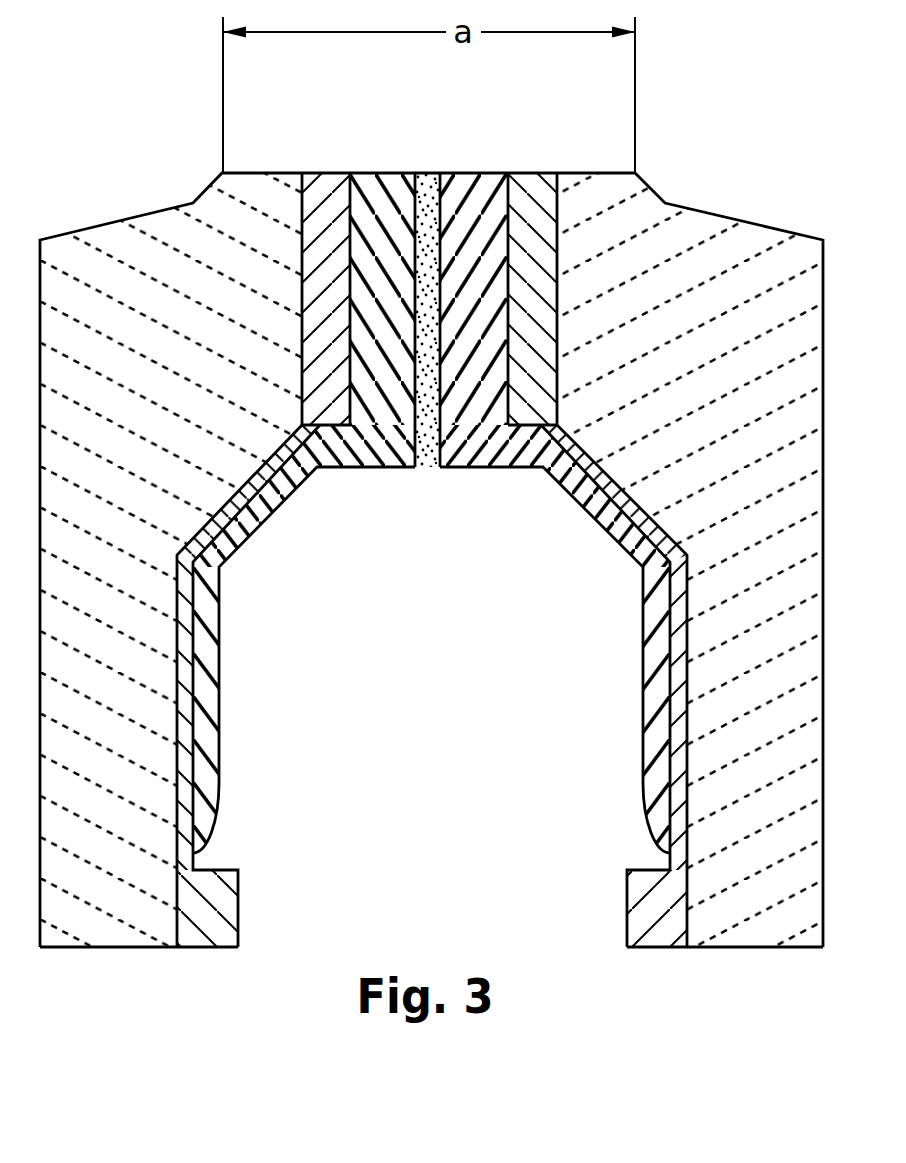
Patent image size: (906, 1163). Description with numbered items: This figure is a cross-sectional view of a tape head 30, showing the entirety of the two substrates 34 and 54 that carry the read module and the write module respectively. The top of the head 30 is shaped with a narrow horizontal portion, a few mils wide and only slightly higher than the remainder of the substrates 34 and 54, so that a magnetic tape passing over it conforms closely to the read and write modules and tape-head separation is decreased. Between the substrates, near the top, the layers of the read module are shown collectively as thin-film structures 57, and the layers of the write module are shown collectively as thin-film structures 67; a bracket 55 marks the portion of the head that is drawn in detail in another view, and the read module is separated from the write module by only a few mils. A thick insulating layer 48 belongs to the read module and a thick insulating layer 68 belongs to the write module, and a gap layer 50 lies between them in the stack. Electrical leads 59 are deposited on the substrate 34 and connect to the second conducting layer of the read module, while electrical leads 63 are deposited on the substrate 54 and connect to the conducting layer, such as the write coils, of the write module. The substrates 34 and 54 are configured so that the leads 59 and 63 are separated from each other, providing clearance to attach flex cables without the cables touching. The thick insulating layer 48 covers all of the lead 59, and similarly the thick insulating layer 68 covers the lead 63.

The tape head 30 is at (94, 958).
The substrate 34 is at (110, 245).
The substrate 54 is at (742, 250).
The bracket 55 is at (432, 504).
The thin-film structures 57 is at (328, 210).
The thick insulating layer 48 is at (383, 200).
The gap layer 50 is at (428, 186).
The thick insulating layer 68 is at (482, 193).
The thin-film structures 67 is at (528, 195).
The leads 59 is at (227, 897).
The leads 63 is at (648, 895).